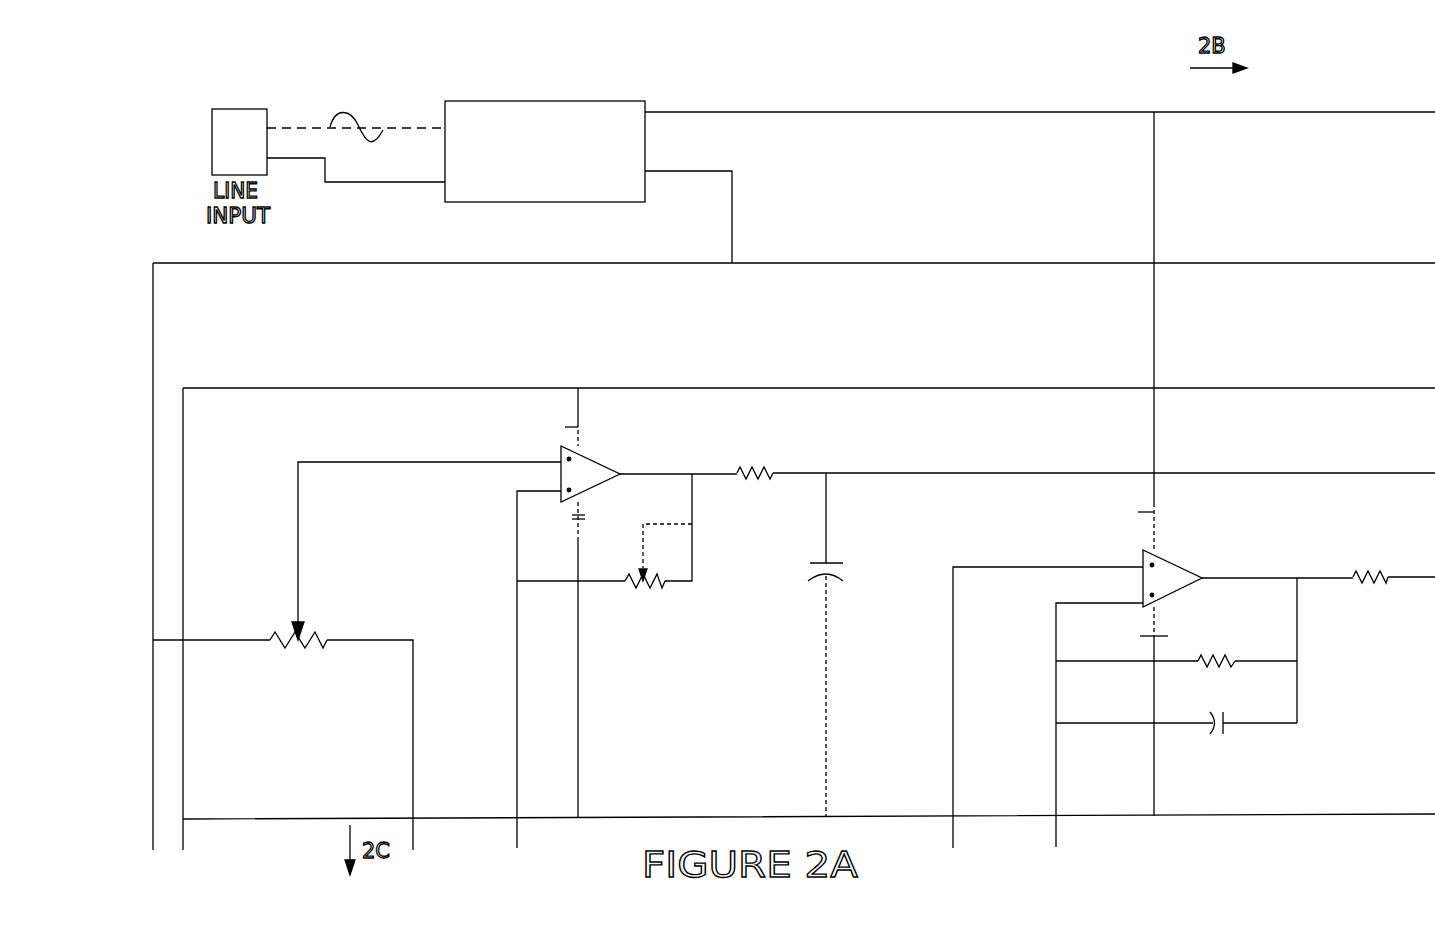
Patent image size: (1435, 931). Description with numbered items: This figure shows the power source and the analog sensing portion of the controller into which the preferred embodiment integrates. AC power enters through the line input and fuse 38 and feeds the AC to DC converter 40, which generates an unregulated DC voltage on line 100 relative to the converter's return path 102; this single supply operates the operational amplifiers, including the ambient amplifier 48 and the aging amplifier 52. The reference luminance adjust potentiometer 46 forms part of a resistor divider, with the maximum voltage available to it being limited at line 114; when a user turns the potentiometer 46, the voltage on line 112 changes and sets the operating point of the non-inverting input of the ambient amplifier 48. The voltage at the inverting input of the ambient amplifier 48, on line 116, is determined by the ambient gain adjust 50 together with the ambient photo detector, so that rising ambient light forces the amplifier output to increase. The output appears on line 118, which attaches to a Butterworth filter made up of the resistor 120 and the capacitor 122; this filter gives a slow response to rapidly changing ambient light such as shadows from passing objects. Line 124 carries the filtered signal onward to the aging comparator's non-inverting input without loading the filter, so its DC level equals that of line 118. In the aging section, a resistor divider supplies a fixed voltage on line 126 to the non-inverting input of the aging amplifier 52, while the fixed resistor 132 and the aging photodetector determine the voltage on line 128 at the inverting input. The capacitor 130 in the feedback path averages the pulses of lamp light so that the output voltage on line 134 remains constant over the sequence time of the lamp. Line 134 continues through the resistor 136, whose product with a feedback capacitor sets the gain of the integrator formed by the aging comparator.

The line input and fuse 38 is at (356, 132).
The AC to DC converter 40 is at (548, 101).
The reference luminance adjust potentiometer 46 is at (240, 680).
The ambient amplifier 48 is at (580, 440).
The ambient gain adjust 50 is at (633, 587).
The aging amplifier 52 is at (1187, 567).
The unregulated DC line 100 is at (777, 112).
The converter return path 102 is at (852, 263).
The line 112 is at (345, 418).
The line 114 is at (368, 640).
The inverting input feedback line 116 is at (517, 519).
The line 118 is at (685, 474).
The resistor 120 is at (750, 473).
The capacitor 122 is at (815, 563).
The line 124 is at (940, 473).
The line 126 is at (957, 567).
The line 128 is at (1056, 650).
The capacitor 130 is at (1225, 733).
The fixed resistor 132 is at (1207, 661).
The line 134 is at (1312, 578).
The resistor 136 is at (1391, 591).